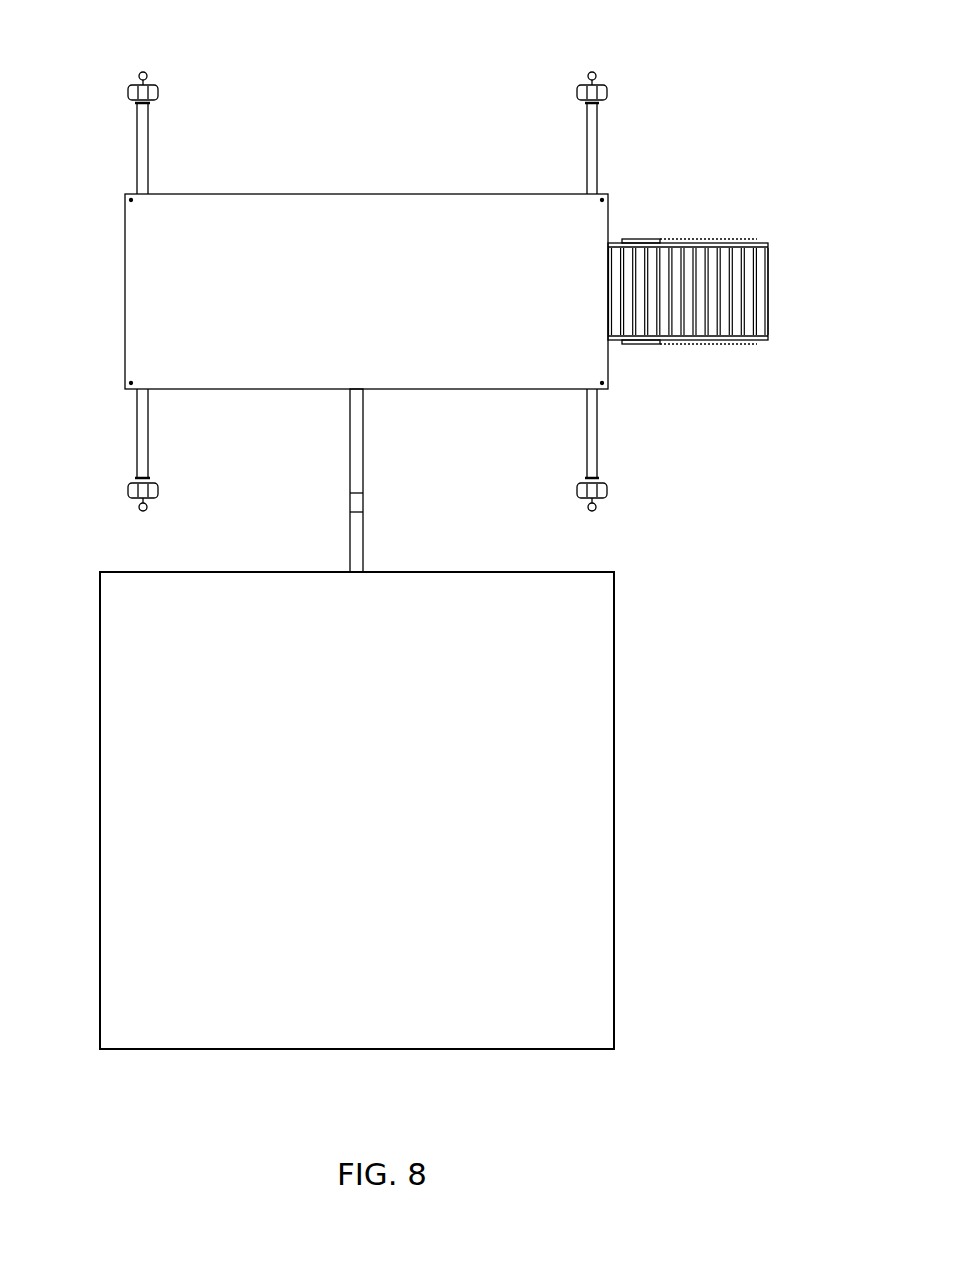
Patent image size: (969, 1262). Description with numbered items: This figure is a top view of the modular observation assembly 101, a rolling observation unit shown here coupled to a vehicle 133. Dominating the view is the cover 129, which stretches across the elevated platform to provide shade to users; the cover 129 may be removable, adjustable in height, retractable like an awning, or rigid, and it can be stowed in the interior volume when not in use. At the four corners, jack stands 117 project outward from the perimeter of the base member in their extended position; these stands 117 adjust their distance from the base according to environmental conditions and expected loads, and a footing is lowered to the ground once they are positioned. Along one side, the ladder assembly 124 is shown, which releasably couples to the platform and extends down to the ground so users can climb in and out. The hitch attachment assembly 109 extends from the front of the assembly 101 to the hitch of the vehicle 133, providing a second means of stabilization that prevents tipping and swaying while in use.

The modular observation assembly 101 is at (520, 52).
The hitch attachment assembly 109 is at (364, 481).
The jack stands 117 is at (118, 92).
The ladder assembly 124 is at (768, 300).
The cover 129 is at (391, 297).
The vehicle 133 is at (374, 724).